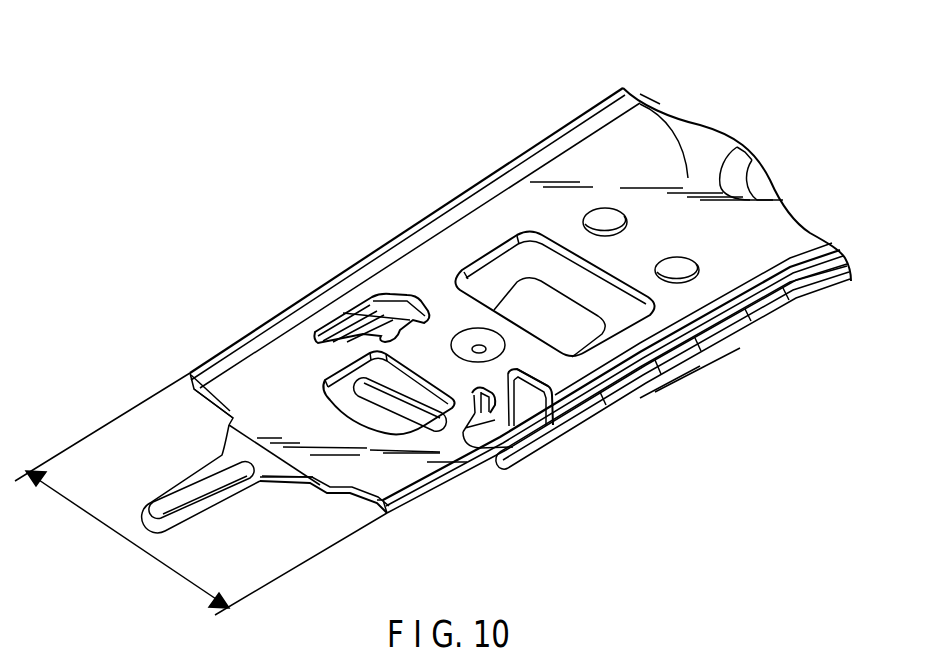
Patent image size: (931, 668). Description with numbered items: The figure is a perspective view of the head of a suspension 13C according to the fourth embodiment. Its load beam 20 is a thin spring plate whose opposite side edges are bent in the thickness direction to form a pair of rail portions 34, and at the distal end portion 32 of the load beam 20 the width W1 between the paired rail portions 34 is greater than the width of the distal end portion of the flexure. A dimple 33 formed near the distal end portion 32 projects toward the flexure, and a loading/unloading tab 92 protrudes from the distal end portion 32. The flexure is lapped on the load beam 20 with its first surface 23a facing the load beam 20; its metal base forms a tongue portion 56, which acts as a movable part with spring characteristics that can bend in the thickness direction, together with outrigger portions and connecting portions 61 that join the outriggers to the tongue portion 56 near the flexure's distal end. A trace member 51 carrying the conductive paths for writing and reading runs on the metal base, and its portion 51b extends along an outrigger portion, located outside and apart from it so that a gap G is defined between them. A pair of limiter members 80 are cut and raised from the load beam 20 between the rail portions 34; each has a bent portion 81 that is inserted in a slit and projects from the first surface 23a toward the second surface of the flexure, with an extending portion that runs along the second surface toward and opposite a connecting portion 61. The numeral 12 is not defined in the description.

The rail 12 is at (279, 291).
The suspension 13C is at (698, 88).
The load beam 20 is at (682, 180).
The first surface 23a is at (372, 418).
The distal end portion 32 is at (270, 416).
The dimple 33 is at (479, 349).
The rail portions 34 is at (422, 238).
The trace member 51 is at (797, 288).
The portion of the trace member 51b is at (715, 350).
The tongue portion 56 is at (548, 307).
The connecting portions 61 is at (487, 433).
The limiter members 80 is at (397, 317).
The bent portion 81 is at (543, 410).
The loading/unloading tab 92 is at (205, 513).
The gaps G is at (660, 370).
The width W1 is at (201, 494).